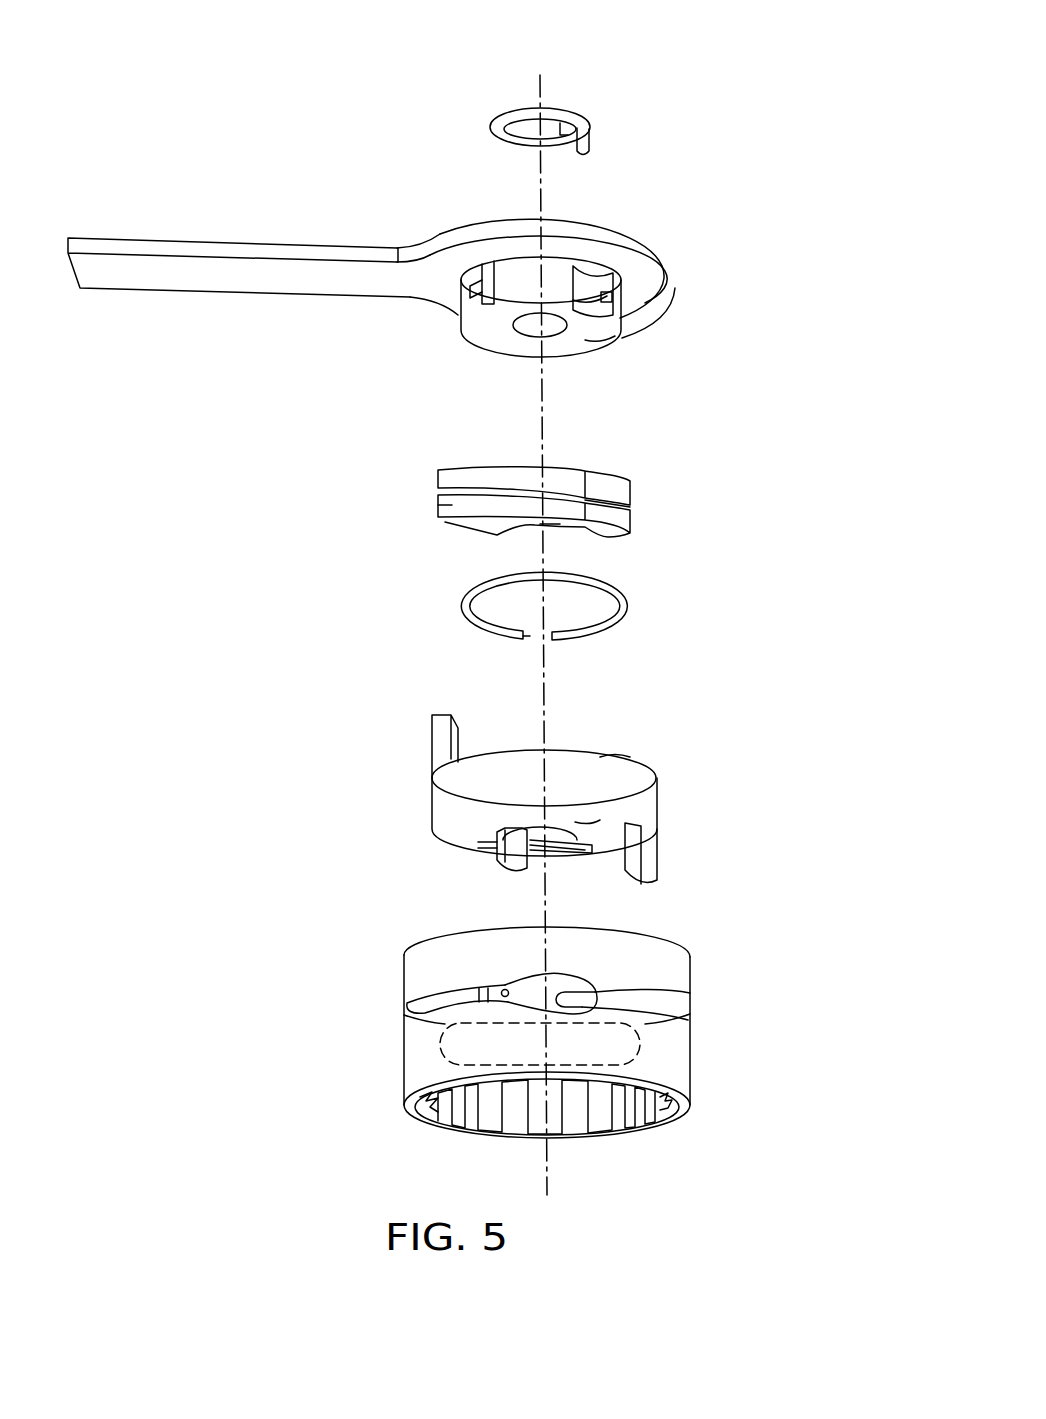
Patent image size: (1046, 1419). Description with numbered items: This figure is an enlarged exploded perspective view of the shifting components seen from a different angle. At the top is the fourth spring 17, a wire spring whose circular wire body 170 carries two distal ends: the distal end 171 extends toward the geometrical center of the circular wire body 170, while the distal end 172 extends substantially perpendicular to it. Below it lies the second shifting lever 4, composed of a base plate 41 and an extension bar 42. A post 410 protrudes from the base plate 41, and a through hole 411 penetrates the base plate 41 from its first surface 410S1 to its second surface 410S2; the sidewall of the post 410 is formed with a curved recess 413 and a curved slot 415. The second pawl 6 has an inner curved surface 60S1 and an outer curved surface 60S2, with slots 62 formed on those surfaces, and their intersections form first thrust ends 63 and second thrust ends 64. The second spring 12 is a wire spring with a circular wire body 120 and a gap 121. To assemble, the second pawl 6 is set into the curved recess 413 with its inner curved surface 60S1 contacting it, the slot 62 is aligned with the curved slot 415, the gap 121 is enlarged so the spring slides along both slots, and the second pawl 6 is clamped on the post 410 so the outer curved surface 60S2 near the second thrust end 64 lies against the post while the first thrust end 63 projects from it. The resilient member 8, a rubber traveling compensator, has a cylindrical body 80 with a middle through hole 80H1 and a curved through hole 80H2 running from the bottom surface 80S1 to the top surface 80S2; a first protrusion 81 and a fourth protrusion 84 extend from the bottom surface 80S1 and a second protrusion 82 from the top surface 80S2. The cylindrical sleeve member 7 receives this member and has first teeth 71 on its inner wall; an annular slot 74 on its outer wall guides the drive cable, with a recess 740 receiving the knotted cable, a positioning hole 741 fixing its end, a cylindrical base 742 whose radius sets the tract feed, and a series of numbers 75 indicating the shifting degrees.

The second shifting lever 4 is at (383, 140).
The base plate 41 is at (463, 210).
The extension bar 42 is at (262, 236).
The post 410 is at (643, 329).
The through hole 411 is at (511, 323).
The curved recess 413 is at (587, 296).
The curved slot 415 is at (625, 300).
The first surface 410S1 is at (598, 334).
The second surface 410S2 is at (607, 296).
The fourth spring 17 is at (560, 110).
The circular wire body 170 is at (518, 127).
The distal end 171 is at (586, 140).
The distal end 172 is at (555, 128).
The second pawl 6 is at (466, 456).
The slot 62 is at (632, 520).
The first thrust end 63 is at (440, 520).
The second thrust end 64 is at (635, 490).
The inner curved surface 60S1 is at (548, 525).
The outer curved surface 60S2 is at (458, 500).
The second spring 12 is at (621, 629).
The circular wire body 120 is at (462, 607).
The gap 121 is at (538, 633).
The resilient member 8 is at (384, 766).
The cylindrical body 80 is at (430, 808).
The first protrusion 81 is at (658, 860).
The second protrusion 82 is at (445, 728).
The fourth protrusion 84 is at (497, 857).
The through hole 80H1 is at (568, 843).
The through hole 80H2 is at (493, 843).
The bottom surface 80S1 is at (585, 822).
The top surface 80S2 is at (615, 755).
The cylindrical sleeve member 7 is at (388, 965).
The first teeth 71 is at (592, 1117).
The annular slot 74 is at (685, 1021).
The recess 740 is at (560, 985).
The positioning hole 741 is at (505, 993).
The cylindrical base 742 is at (640, 1007).
The series of numbers 75 is at (640, 1060).